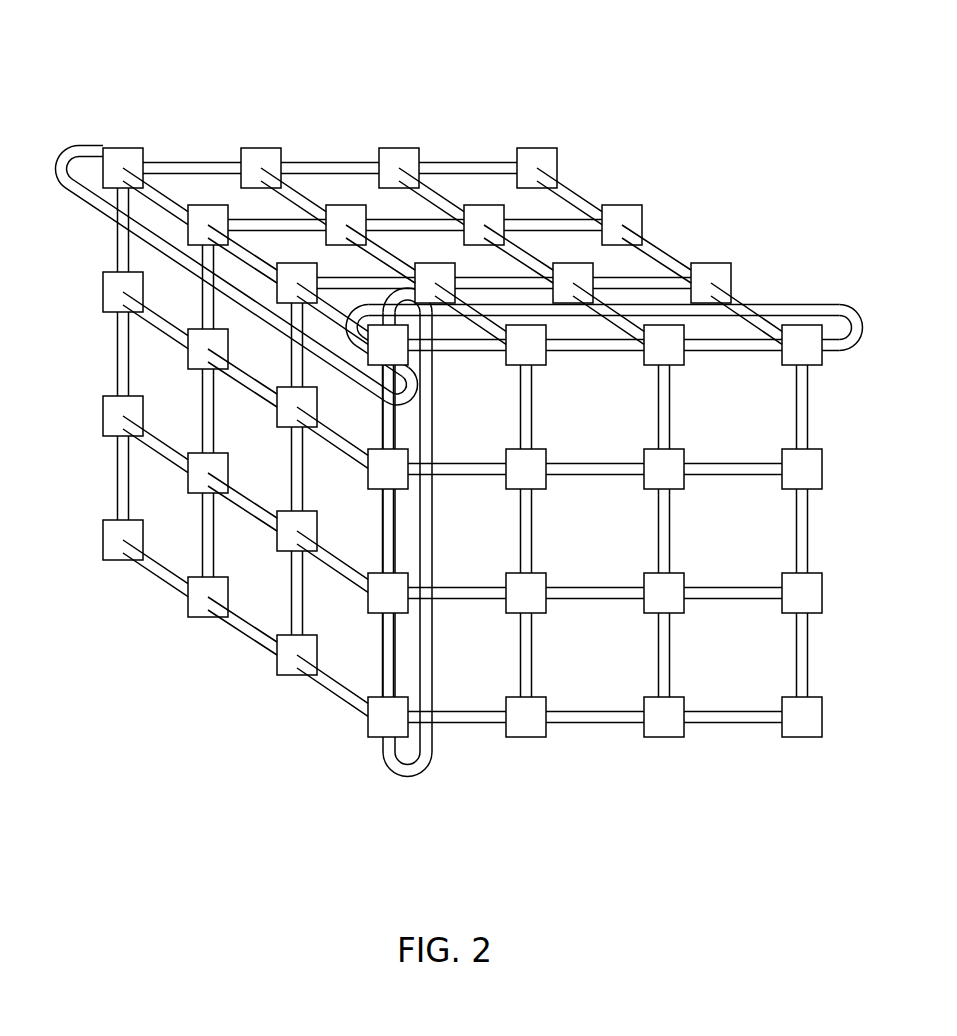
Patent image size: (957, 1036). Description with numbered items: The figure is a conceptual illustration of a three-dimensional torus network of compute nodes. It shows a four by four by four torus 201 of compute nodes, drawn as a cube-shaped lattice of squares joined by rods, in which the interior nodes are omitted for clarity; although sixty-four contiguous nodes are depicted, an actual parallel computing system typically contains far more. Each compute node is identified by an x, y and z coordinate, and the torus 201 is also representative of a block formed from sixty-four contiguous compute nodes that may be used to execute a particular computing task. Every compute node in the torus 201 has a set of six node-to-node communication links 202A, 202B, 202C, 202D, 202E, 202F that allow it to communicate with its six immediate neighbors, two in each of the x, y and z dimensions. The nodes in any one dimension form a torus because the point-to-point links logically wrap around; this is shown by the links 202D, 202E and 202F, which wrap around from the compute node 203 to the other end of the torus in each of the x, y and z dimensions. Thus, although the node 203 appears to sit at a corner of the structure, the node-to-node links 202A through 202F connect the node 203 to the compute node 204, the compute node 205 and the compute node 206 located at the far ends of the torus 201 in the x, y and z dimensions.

The torus 201 is at (600, 78).
The node-to-node communication link 202A is at (453, 352).
The node-to-node communication link 202B is at (398, 427).
The node-to-node communication link 202C is at (347, 322).
The node-to-node communication link 202D is at (828, 303).
The node-to-node communication link 202E is at (405, 778).
The node-to-node communication link 202F is at (63, 146).
The compute node 203 is at (380, 347).
The compute node 204 is at (125, 155).
The compute node 205 is at (810, 352).
The compute node 206 is at (380, 725).